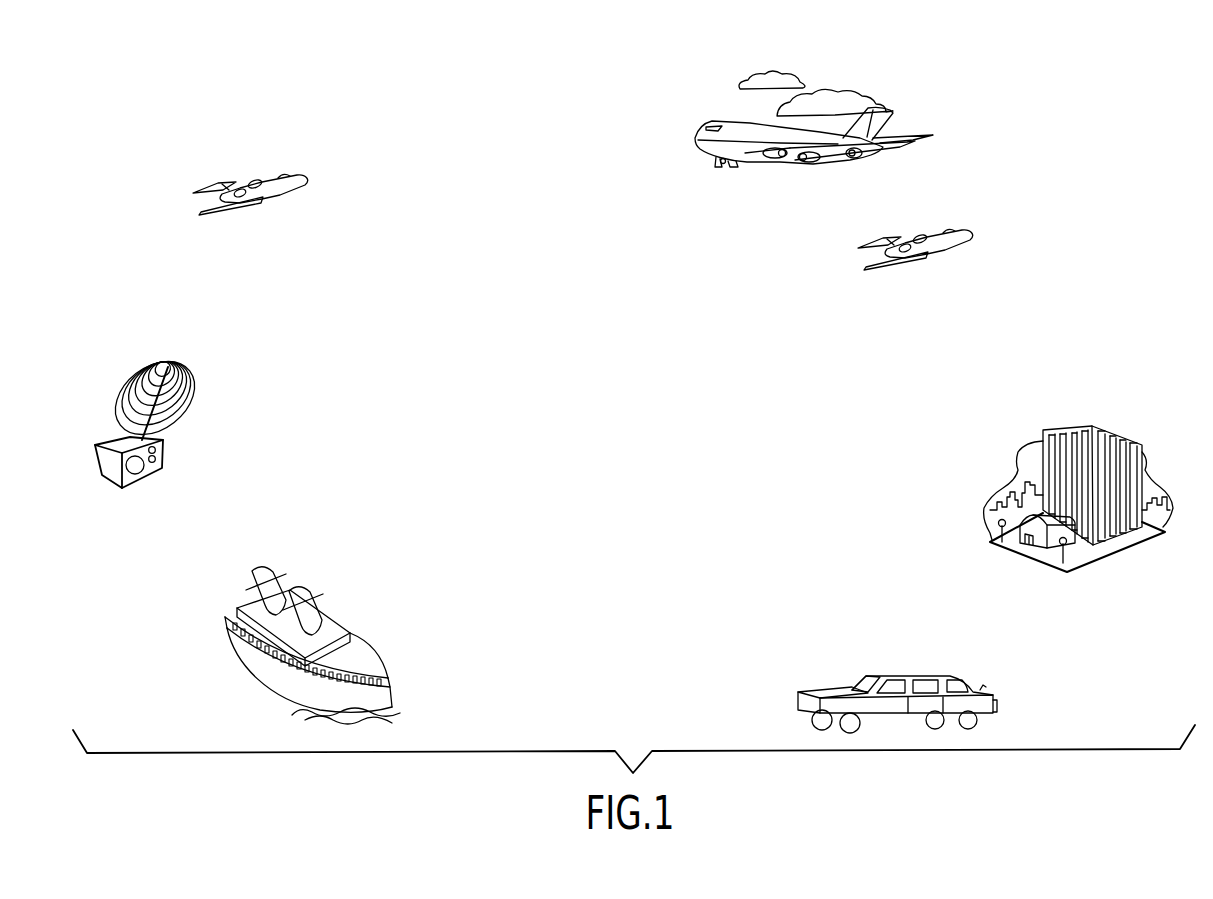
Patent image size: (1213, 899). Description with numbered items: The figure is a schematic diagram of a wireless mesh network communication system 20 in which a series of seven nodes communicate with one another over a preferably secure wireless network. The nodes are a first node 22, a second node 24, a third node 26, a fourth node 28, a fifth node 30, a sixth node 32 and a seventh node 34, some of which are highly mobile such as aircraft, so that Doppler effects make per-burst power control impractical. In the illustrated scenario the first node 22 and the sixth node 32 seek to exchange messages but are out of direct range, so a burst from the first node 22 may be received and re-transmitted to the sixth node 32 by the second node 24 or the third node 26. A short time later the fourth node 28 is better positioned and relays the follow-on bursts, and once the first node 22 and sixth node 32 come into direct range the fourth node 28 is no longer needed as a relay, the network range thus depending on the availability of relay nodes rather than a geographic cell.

The system 20 is at (500, 162).
The first node 22 is at (282, 197).
The second node 24 is at (112, 438).
The third node 26 is at (342, 622).
The fourth node 28 is at (777, 164).
The fifth node 30 is at (948, 254).
The sixth node 32 is at (1103, 558).
The seventh node 34 is at (913, 673).